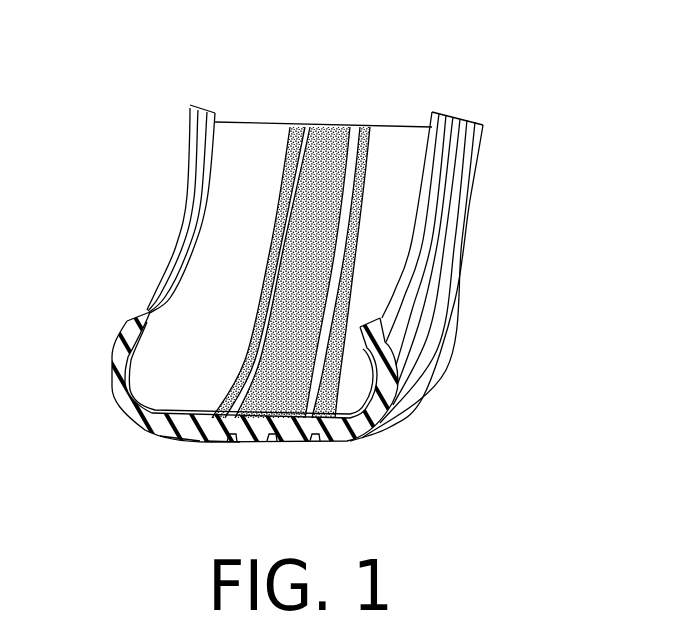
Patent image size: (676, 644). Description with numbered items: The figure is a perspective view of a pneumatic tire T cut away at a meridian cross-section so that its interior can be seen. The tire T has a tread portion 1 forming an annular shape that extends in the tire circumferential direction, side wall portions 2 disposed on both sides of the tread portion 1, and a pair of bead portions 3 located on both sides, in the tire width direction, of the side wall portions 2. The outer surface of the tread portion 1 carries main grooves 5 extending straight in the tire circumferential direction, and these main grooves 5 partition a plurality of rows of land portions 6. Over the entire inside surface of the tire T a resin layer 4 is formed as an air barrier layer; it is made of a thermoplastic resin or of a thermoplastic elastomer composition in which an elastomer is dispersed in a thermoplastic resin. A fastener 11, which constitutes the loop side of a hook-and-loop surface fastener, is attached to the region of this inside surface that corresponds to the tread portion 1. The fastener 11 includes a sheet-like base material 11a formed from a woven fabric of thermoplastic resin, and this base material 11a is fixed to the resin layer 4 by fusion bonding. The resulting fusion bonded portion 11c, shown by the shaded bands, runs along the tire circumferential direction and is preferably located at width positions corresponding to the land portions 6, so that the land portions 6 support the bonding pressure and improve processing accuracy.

The pneumatic tire T is at (480, 146).
The tread portion 1 is at (298, 443).
The side wall portions 2 is at (118, 403).
The bead portions 3 is at (127, 328).
The resin layer 4 is at (237, 122).
The main grooves 5 is at (183, 430).
The land portions 6 is at (222, 437).
The fastener 11 is at (347, 126).
The base material 11a is at (326, 126).
The fusion bonded portion 11c is at (296, 126).